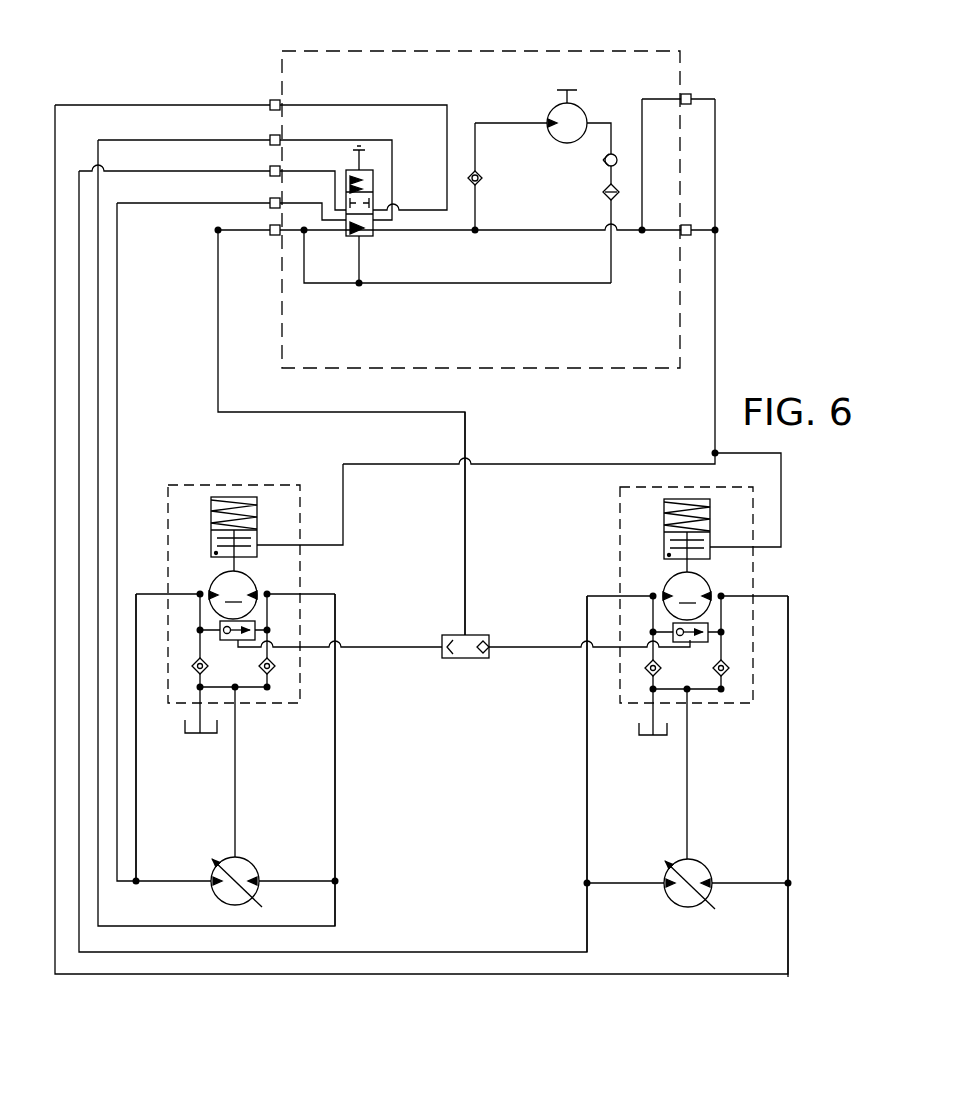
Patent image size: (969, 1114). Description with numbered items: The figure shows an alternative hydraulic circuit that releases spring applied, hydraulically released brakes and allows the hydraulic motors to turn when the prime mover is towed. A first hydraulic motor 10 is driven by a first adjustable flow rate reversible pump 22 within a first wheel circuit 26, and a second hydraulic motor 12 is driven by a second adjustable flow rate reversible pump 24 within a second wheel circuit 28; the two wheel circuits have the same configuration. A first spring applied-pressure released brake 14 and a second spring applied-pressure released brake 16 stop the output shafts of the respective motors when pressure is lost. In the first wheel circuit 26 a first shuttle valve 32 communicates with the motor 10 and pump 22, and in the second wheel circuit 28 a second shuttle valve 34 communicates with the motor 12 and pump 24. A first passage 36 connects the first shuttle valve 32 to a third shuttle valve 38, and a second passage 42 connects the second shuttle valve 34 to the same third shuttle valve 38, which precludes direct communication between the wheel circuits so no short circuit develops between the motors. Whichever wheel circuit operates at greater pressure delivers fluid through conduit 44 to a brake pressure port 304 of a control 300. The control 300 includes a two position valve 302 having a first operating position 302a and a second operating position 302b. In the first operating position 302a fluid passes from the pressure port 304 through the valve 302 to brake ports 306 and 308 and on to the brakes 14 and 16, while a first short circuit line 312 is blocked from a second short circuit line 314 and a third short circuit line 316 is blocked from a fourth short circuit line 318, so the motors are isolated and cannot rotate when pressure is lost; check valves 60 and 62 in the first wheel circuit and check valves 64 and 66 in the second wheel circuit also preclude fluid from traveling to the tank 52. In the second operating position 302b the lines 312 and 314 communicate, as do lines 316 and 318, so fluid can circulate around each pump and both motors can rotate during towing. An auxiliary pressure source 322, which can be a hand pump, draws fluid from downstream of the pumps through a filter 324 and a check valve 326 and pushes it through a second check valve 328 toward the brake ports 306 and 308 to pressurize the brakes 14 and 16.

The control 300 is at (458, 38).
The two position valve 302 is at (384, 211).
The first operating position 302a is at (374, 176).
The second operating position 302b is at (370, 238).
The brake pressure port 304 is at (272, 240).
The brake port 306 is at (688, 238).
The brake port 308 is at (688, 106).
The auxiliary pressure source 322 is at (576, 118).
The filter 324 is at (606, 195).
The check valve 326 is at (604, 161).
The second check valve 328 is at (481, 181).
The first spring applied-pressure released brake 14 is at (256, 537).
The second spring applied-pressure released brake 16 is at (704, 543).
The first hydraulic motor 10 is at (235, 595).
The second hydraulic motor 12 is at (687, 596).
The first wheel circuit 26 is at (350, 780).
The second wheel circuit 28 is at (578, 784).
The first shuttle valve 32 is at (230, 641).
The second shuttle valve 34 is at (698, 644).
The first passage 36 is at (373, 652).
The third shuttle valve 38 is at (463, 660).
The second passage 42 is at (552, 652).
The conduit 44 is at (470, 551).
The tank 52 is at (193, 741).
The check valve 60 is at (270, 672).
The check valve 62 is at (197, 671).
The check valve 64 is at (723, 675).
The check valve 66 is at (650, 673).
The first adjustable flow rate reversible pump 22 is at (252, 869).
The second adjustable flow rate reversible pump 24 is at (704, 869).
The first short circuit line 312 is at (338, 903).
The second short circuit line 314 is at (122, 884).
The third short circuit line 316 is at (791, 918).
The fourth short circuit line 318 is at (590, 920).